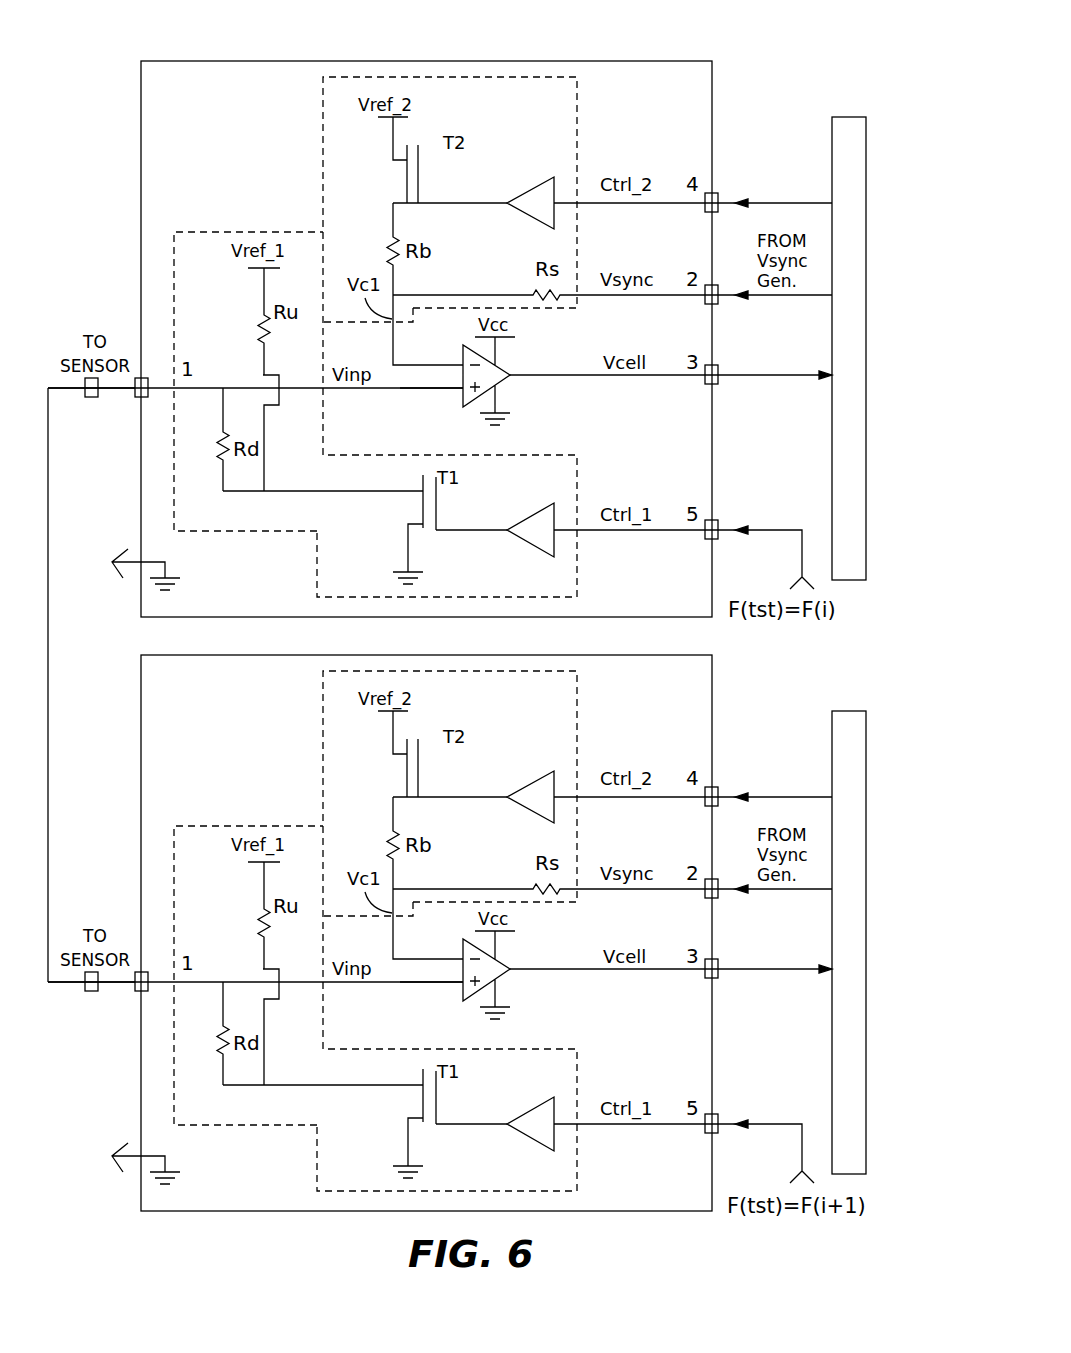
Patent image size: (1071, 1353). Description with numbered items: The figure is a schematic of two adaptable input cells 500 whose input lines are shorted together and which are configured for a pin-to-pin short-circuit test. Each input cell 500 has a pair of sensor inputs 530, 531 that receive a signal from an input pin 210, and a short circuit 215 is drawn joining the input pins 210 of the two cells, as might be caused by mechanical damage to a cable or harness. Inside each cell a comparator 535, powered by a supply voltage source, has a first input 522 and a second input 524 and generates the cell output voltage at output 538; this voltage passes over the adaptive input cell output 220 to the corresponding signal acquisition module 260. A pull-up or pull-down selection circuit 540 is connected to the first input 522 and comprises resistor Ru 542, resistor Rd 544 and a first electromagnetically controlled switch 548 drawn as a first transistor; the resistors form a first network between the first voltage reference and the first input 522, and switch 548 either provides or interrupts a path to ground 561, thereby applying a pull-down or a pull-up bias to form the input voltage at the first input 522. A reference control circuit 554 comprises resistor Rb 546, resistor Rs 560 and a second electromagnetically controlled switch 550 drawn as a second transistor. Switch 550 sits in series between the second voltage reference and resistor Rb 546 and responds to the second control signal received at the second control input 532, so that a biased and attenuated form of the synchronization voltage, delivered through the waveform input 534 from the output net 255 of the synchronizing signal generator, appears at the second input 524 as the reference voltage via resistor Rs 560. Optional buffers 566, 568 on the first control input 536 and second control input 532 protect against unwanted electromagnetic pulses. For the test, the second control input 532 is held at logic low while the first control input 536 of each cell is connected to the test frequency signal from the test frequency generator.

The adaptive input cell 500 is at (127, 143).
The reference control circuit 554 is at (577, 91).
The second electromagnetically controlled switch 550 is at (455, 126).
The buffer 568 is at (535, 192).
The second control input 532 is at (718, 198).
The signal acquisition module 260 is at (848, 117).
The resistor Rb 546 is at (390, 251).
The resistor Rs 560 is at (530, 273).
The waveform input 534 is at (718, 290).
The output net of synchronizing signal generator 255 is at (783, 297).
The resistor Ru 542 is at (262, 339).
The second input 524 is at (460, 364).
The output 538 is at (718, 372).
The adaptive input cell output 220 is at (782, 378).
The sensor input 530 is at (134, 395).
The input pin 210 is at (80, 397).
The first input 522 is at (465, 390).
The comparator 535 is at (505, 383).
The resistor Rd 544 is at (222, 448).
The first electromagnetically controlled switch 548 is at (438, 501).
The buffer 566 is at (535, 520).
The first control input 536 is at (718, 527).
The sensor input 531 is at (134, 560).
The ground 561 is at (406, 570).
The selection circuit 540 is at (258, 533).
The short circuit 215 is at (50, 592).